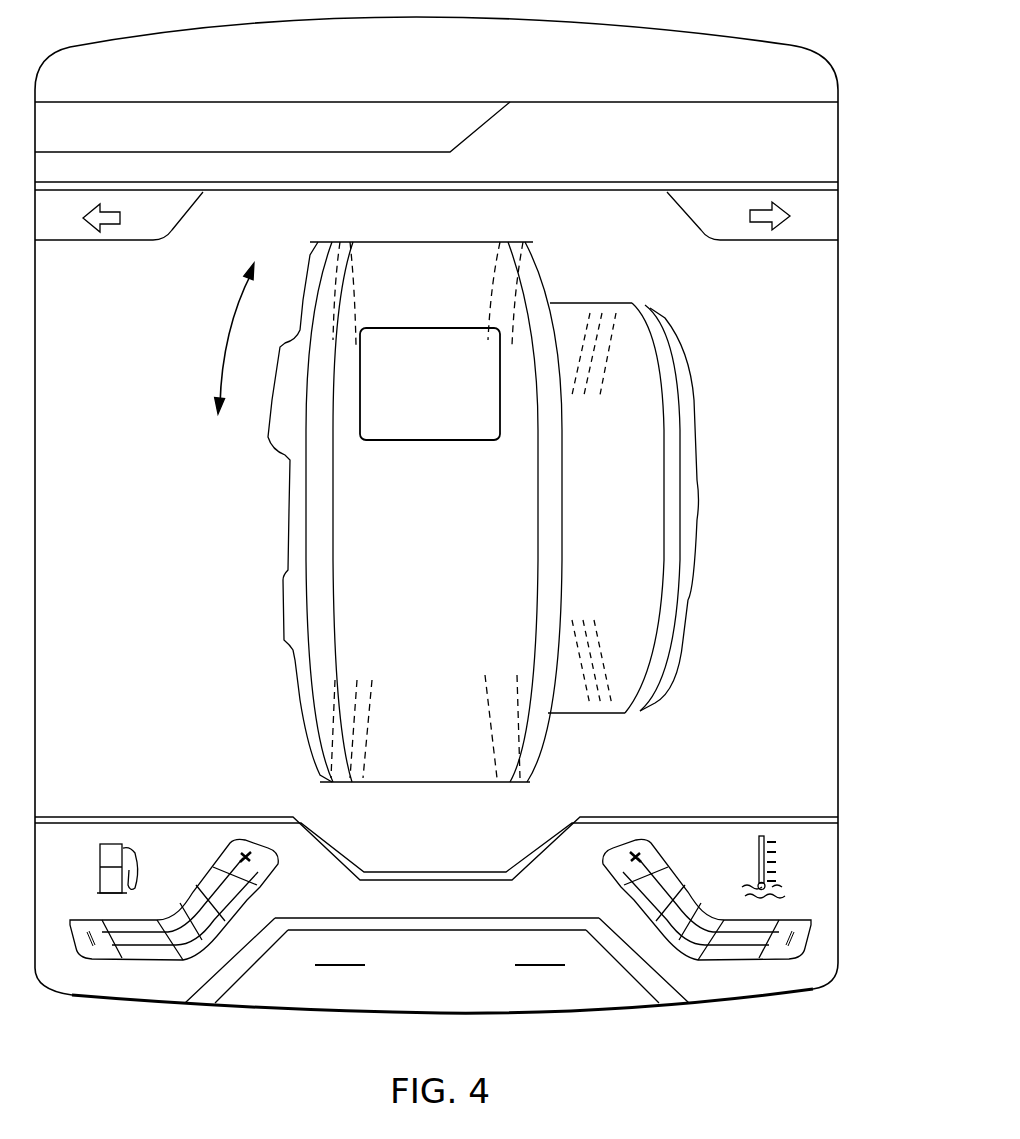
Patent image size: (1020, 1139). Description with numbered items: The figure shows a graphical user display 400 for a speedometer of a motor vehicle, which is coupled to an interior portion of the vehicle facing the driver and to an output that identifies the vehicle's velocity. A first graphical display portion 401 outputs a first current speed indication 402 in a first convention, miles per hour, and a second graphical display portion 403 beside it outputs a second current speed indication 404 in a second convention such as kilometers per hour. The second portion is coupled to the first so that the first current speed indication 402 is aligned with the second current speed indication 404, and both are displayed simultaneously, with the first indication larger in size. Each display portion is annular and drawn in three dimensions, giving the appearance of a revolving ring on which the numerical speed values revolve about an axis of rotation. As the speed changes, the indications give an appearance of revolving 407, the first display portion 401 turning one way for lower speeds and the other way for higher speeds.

The graphical user display 400 is at (677, 72).
The first graphical display portion 401 is at (298, 693).
The first current speed indication 402 is at (378, 423).
The second graphical display portion 403 is at (685, 507).
The second current speed indication 404 is at (640, 405).
The appearance of revolving 407 is at (228, 338).